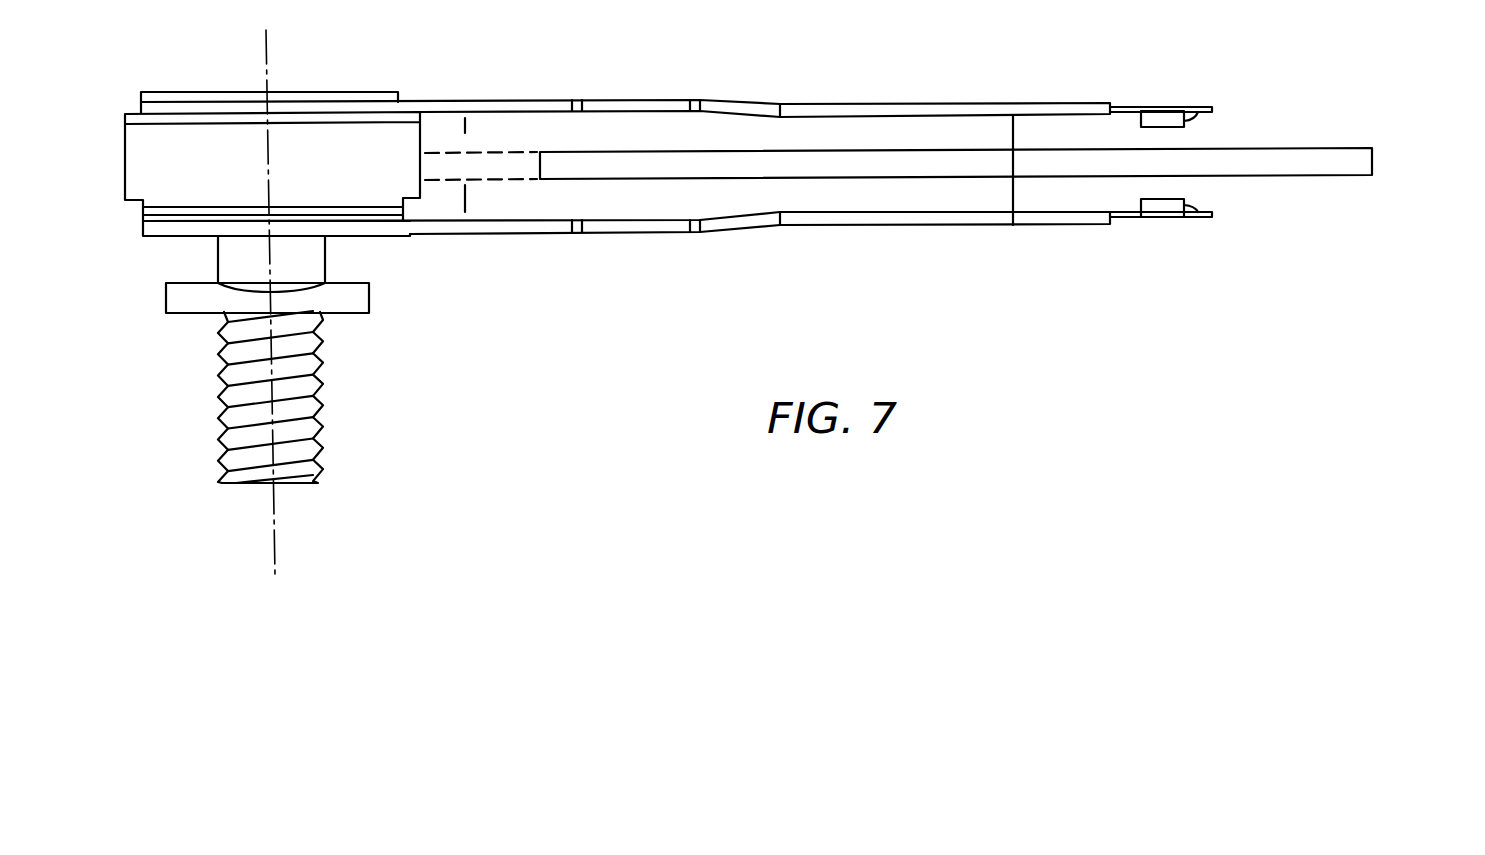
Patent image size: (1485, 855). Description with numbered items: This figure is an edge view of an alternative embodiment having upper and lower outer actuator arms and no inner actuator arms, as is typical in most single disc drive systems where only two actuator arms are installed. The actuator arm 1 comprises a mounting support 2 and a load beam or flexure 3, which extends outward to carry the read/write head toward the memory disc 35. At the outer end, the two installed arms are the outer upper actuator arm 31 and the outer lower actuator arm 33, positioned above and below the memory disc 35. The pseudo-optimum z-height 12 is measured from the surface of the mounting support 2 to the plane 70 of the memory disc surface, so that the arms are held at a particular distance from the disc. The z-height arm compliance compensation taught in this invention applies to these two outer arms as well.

The actuator arm 1 is at (798, 287).
The mounting support 2 is at (643, 233).
The load beam or flexure 3 is at (1013, 225).
The z-height 12 is at (465, 200).
The outer upper actuator arm 31 is at (1221, 110).
The outer lower actuator arm 33 is at (1212, 227).
The memory disc 35 is at (1382, 163).
The plane of the memory disc surface 70 is at (525, 180).